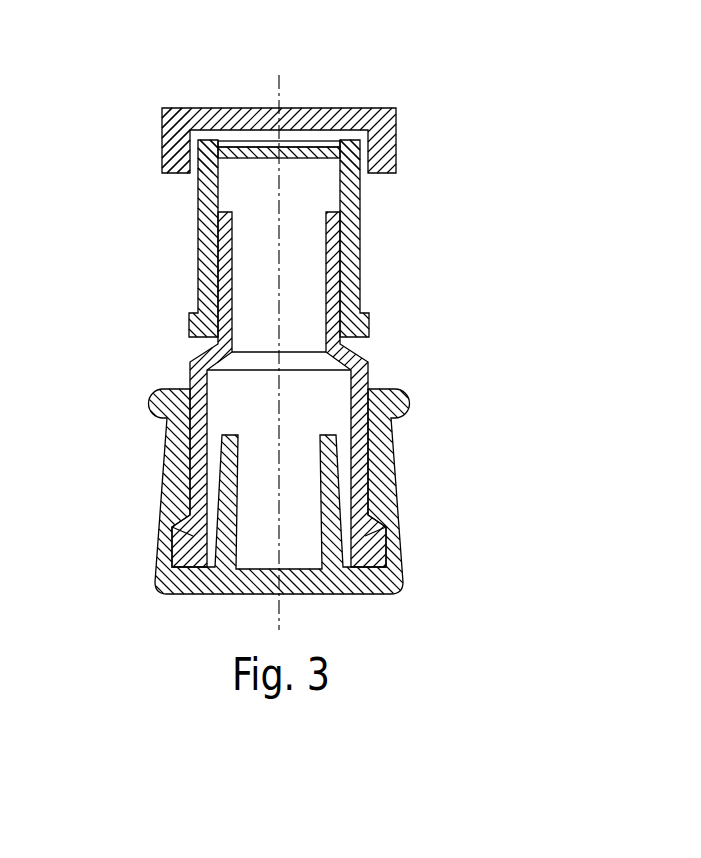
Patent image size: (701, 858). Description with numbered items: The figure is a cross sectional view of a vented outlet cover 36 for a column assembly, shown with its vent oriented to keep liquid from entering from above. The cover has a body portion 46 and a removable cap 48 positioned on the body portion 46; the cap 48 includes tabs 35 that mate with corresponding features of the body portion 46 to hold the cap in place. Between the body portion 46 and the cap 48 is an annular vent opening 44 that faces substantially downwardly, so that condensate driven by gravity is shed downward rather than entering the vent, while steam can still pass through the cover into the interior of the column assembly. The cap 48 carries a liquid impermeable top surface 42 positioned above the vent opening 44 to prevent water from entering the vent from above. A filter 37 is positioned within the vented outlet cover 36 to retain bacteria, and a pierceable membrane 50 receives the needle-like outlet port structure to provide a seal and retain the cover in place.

The tabs 35 is at (358, 158).
The vented outlet cover 36 is at (460, 195).
The filter 37 is at (249, 142).
The top surface 42 is at (335, 108).
The vent opening 44 is at (194, 177).
The body portion 46 is at (353, 290).
The cap 48 is at (178, 112).
The pierceable membrane 50 is at (297, 582).